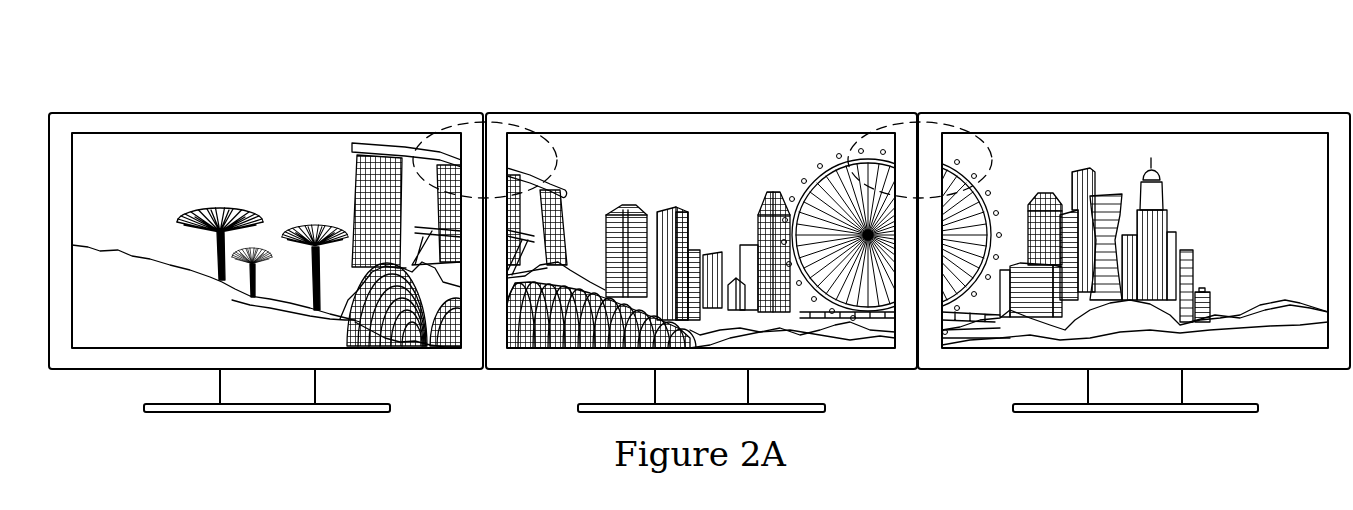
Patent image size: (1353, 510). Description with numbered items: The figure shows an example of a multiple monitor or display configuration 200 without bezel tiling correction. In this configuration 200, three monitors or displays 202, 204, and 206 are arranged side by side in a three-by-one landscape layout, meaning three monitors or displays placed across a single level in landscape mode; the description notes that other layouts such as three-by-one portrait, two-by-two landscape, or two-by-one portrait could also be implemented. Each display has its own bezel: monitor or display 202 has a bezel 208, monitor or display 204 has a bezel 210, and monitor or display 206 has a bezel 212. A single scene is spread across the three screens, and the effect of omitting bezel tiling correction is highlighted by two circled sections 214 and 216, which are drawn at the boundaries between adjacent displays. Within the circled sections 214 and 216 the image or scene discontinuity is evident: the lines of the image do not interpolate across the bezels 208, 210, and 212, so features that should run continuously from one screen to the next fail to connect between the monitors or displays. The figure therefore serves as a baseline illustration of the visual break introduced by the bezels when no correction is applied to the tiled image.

The multiple monitor or display configuration 200 is at (356, 79).
The monitor or display 202 is at (182, 412).
The monitor or display 204 is at (578, 407).
The monitor or display 206 is at (1220, 412).
The bezel 208 is at (267, 113).
The bezel 210 is at (701, 113).
The bezel 212 is at (1135, 113).
The circled section 214 is at (456, 123).
The circled section 216 is at (940, 122).